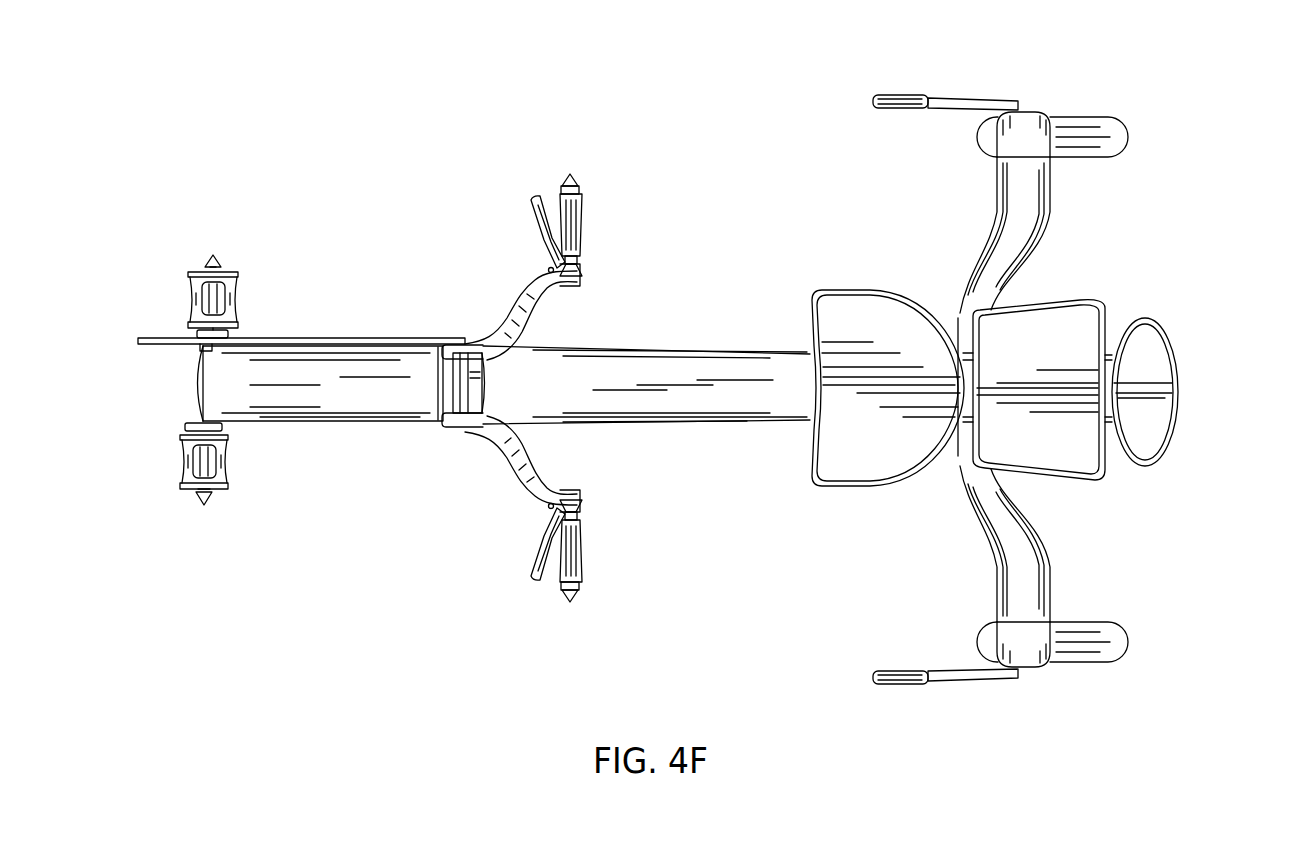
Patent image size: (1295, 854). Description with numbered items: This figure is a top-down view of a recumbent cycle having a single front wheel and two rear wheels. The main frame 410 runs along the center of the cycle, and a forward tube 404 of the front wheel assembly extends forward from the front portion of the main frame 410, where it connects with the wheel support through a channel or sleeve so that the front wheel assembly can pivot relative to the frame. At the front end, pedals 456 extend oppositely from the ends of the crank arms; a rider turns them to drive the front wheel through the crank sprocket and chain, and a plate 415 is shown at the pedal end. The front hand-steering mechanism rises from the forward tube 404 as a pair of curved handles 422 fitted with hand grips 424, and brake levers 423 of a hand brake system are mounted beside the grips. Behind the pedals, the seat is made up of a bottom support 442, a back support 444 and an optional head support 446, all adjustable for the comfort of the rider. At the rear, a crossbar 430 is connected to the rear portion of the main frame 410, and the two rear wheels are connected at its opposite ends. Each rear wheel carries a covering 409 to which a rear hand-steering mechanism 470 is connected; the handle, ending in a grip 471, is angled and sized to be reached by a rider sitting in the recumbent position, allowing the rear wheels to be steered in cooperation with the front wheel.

The forward tube 404 is at (350, 397).
The covering of a rear wheel 409 is at (1100, 120).
The main frame 410 is at (670, 413).
The crank plate 415 is at (327, 338).
The handle 422 is at (542, 312).
The brake lever 423 is at (540, 220).
The hand grip 424 is at (578, 222).
The crossbar 430 is at (987, 538).
The bottom support 442 is at (873, 308).
The back support 444 is at (1073, 303).
The head support 446 is at (1153, 340).
The pedal 456 is at (240, 292).
The rear hand-steering mechanism 470 is at (965, 97).
The handlebar grip 471 is at (893, 92).